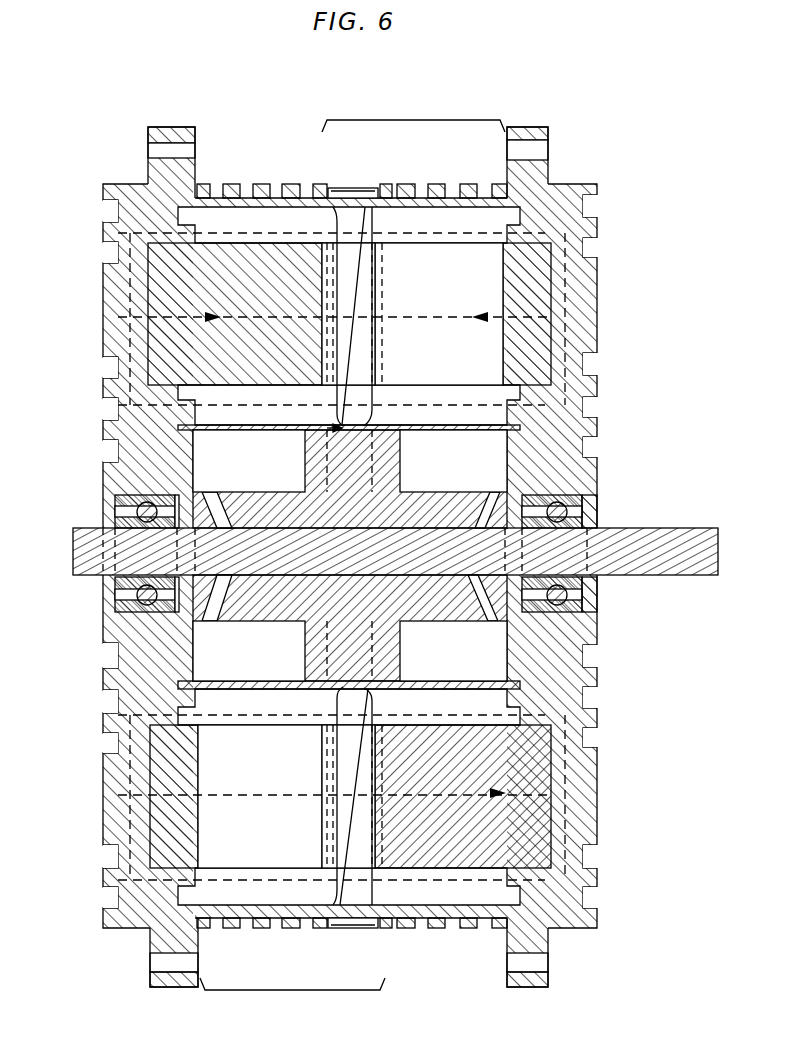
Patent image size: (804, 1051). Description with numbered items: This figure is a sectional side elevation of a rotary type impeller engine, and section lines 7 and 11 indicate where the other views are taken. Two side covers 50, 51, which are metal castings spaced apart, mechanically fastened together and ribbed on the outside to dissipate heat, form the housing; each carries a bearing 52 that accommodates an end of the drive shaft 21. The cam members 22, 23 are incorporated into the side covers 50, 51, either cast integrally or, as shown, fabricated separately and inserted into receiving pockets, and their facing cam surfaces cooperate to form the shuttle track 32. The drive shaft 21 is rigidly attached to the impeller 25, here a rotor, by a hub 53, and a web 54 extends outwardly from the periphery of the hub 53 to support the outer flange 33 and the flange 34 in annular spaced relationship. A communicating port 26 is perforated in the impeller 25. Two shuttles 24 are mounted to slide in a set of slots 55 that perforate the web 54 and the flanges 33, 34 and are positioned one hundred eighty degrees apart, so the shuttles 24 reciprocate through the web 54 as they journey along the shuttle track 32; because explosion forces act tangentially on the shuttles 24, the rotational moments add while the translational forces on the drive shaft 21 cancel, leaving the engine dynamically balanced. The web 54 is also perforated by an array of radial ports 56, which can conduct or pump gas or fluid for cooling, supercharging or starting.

The section line 7- 7 is at (343, 180).
The section line 11- 11 is at (332, 153).
The drive shaft 21 is at (712, 548).
The cam member 22 is at (168, 275).
The cam member 23 is at (540, 300).
The shuttle 24 is at (470, 350).
The impeller 25 is at (386, 466).
The communicating port 26 is at (347, 275).
The shuttle track 32 is at (414, 118).
The outer flange 33 is at (434, 188).
The flange 34 is at (258, 410).
The side cover 50 is at (115, 292).
The side cover 51 is at (592, 302).
The bearing 52 is at (122, 504).
The hub 53 is at (455, 505).
The web 54 is at (362, 312).
The slot 55 is at (245, 214).
The radial port 56 is at (312, 468).